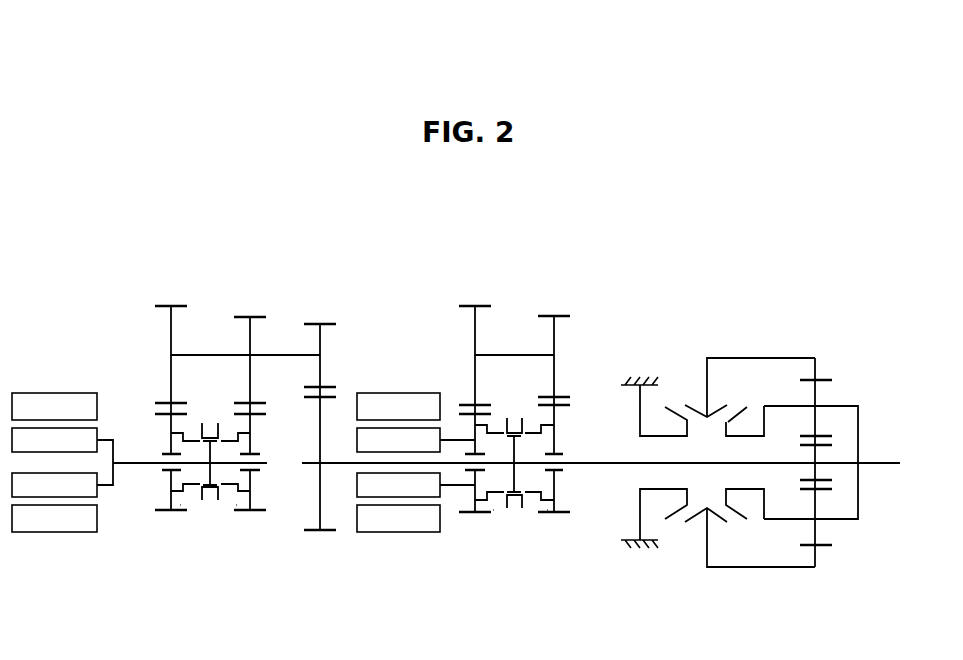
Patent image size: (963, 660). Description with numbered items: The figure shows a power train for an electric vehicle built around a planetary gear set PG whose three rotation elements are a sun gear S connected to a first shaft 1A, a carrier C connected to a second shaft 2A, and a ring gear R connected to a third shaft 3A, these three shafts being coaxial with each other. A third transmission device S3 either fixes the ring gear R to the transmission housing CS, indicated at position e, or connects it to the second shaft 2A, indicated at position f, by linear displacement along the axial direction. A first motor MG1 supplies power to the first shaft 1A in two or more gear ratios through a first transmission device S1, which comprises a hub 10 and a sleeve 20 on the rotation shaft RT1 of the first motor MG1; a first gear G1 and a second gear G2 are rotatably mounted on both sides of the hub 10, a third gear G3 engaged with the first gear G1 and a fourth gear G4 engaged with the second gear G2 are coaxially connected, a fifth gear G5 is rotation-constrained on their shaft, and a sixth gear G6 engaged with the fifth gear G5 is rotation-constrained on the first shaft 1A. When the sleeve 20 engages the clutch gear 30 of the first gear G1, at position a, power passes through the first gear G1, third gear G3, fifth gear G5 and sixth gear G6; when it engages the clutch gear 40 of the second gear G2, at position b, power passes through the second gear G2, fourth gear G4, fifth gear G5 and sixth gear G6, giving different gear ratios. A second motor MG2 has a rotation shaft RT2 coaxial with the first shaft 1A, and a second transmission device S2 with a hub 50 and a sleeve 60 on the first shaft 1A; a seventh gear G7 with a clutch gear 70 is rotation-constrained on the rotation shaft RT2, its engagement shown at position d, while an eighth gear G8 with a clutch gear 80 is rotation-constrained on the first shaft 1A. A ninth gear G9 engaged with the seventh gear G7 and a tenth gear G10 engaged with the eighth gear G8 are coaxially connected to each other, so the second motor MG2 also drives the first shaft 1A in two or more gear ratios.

The hub 10 is at (202, 473).
The sleeve 20 is at (213, 422).
The clutch gear 30 is at (188, 486).
The clutch gear 40 is at (228, 479).
The hub 50 is at (517, 477).
The sleeve 60 is at (488, 502).
The clutch gear 70 is at (493, 424).
The clutch gear 80 is at (533, 436).
The first motor MG1 is at (62, 449).
The second motor MG2 is at (416, 449).
The rotation shaft RT1 is at (138, 462).
The rotation shaft RT2 is at (455, 487).
The first gear G1 is at (158, 512).
The second gear G2 is at (262, 512).
The third gear G3 is at (168, 305).
The fourth gear G4 is at (248, 316).
The fifth gear G5 is at (316, 324).
The sixth gear G6 is at (326, 532).
The seventh gear G7 is at (465, 515).
The eighth gear G8 is at (565, 515).
The ninth gear G9 is at (470, 305).
The tenth gear G10 is at (550, 315).
The first transmission device S1 is at (210, 517).
The second transmission device S2 is at (523, 520).
The third transmission device S3 is at (697, 392).
The engagement position a is at (181, 514).
The engagement position b is at (236, 514).
The engagement position d is at (493, 518).
The engagement position e is at (669, 392).
The engagement position f is at (739, 393).
The ring gear R is at (830, 380).
The sun gear S is at (830, 448).
The first shaft 1A is at (828, 464).
The second shaft 2A is at (858, 406).
The third shaft 3A is at (793, 358).
The transmission housing CS is at (655, 550).
The planetary gear set PG is at (832, 562).